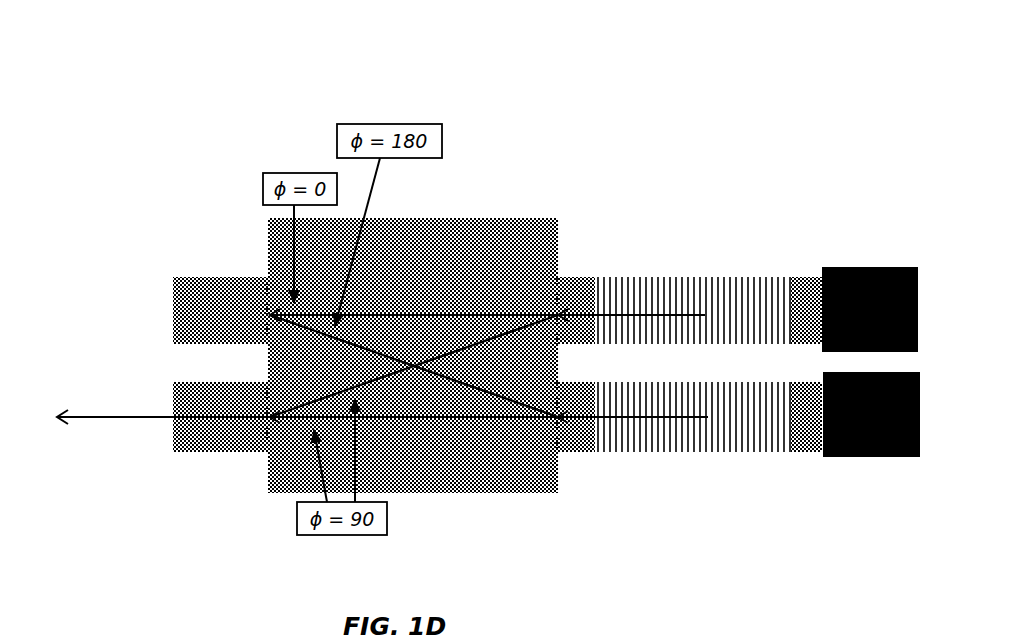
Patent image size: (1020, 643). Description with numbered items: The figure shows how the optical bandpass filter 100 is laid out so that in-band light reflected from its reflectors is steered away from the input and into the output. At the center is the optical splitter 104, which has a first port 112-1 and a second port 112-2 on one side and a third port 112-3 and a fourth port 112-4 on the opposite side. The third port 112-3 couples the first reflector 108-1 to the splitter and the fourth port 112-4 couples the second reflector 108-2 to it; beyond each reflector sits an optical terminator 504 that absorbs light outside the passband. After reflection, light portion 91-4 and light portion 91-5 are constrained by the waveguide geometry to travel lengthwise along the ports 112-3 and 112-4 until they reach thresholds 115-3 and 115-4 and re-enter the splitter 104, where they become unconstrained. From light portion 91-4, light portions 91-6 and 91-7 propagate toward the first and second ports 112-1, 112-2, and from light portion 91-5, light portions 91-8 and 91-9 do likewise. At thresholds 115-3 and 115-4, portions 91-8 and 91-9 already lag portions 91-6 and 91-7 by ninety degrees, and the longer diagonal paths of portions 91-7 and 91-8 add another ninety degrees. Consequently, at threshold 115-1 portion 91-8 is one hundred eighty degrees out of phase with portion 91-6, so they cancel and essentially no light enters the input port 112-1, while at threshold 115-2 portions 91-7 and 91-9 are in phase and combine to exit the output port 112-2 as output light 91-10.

The optical bandpass filter 100 is at (168, 87).
The optical splitter 104 is at (285, 478).
The first port 112-1 is at (223, 295).
The second port 112-2 is at (197, 445).
The third port 112-3 is at (576, 280).
The fourth port 112-4 is at (587, 440).
The first reflector 108-1 is at (755, 297).
The second reflector 108-2 is at (768, 423).
The optical terminator 504 is at (875, 267).
The threshold 115-1 is at (255, 332).
The threshold 115-2 is at (255, 392).
The threshold 115-3 is at (572, 334).
The threshold 115-4 is at (545, 440).
The light portion 91-4 is at (633, 313).
The light portion 91-5 is at (665, 417).
The light portion 91-6 is at (433, 315).
The light portion 91-7 is at (483, 335).
The light portion 91-8 is at (470, 395).
The light portion 91-9 is at (405, 420).
The output light 91-10 is at (110, 420).